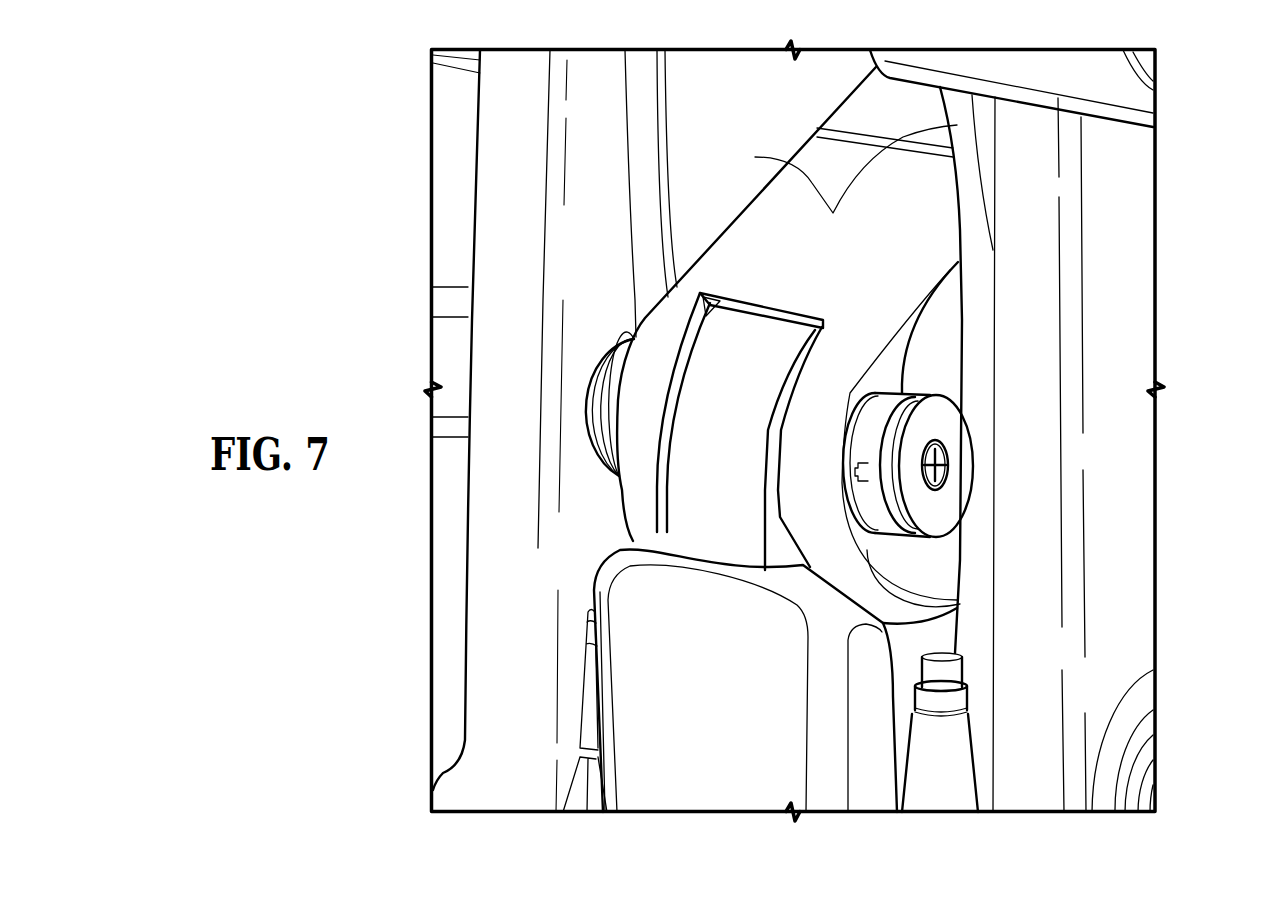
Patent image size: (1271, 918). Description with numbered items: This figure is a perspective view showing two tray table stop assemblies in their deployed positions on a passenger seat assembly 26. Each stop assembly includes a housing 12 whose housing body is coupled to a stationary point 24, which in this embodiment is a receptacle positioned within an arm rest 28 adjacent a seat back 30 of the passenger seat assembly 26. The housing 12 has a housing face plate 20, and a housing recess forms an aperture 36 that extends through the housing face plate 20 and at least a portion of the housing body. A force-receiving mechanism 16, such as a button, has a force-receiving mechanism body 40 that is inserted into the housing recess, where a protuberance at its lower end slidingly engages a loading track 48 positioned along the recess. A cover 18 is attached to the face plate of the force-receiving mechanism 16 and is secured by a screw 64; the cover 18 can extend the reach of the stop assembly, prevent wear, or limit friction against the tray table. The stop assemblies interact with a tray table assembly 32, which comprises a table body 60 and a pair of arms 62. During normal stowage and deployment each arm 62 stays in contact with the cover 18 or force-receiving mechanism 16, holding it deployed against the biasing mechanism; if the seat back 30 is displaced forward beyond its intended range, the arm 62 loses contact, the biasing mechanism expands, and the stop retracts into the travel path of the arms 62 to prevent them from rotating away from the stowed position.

The housing 12 is at (867, 520).
The force-receiving mechanism 16 is at (608, 373).
The cover 18 is at (572, 410).
The housing face plate 20 is at (903, 370).
The stationary point 24 is at (877, 393).
The passenger seat assembly 26 is at (279, 103).
The arm rest 28 is at (795, 550).
The seat back 30 is at (463, 507).
The tray table assembly 32 is at (580, 715).
The aperture 36 is at (907, 355).
The force-receiving mechanism body 40 is at (618, 433).
The loading track 48 is at (855, 490).
The table body 60 is at (1113, 125).
The arm 62 is at (856, 183).
The screw 64 is at (947, 460).